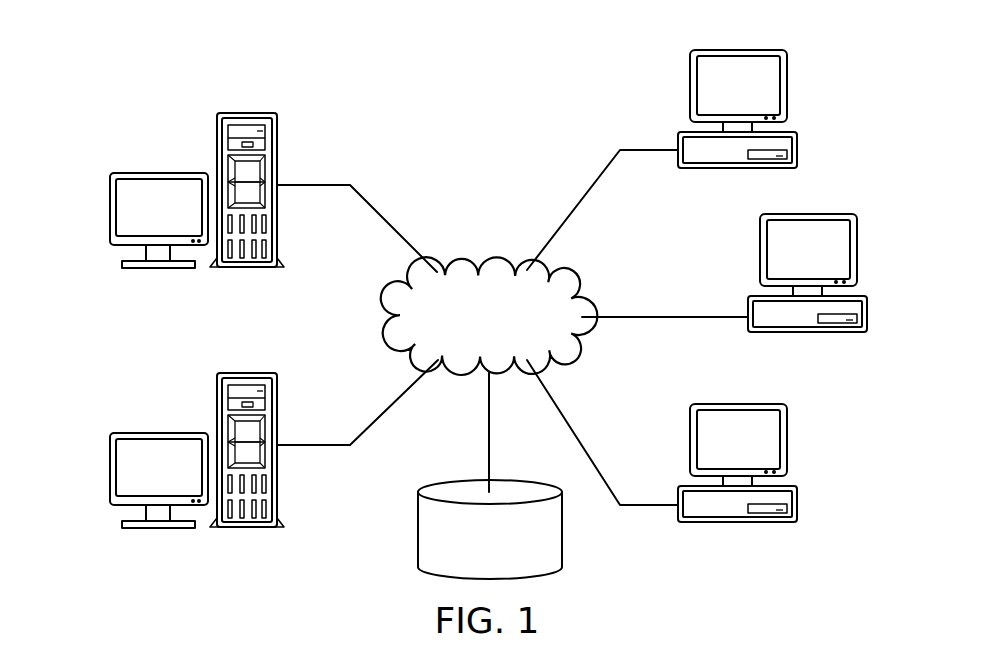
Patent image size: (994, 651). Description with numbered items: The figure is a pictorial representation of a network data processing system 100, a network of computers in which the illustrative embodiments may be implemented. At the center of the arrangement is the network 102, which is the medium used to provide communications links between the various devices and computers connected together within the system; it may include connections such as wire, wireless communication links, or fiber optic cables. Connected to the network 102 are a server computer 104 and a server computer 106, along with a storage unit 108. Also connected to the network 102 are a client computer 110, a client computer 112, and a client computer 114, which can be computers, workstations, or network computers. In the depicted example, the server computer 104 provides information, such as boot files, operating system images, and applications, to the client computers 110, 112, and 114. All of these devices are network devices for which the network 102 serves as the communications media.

The network data processing system 100 is at (350, 60).
The network 102 is at (462, 262).
The server computer 104 is at (110, 187).
The server computer 106 is at (110, 468).
The storage unit 108 is at (418, 528).
The client computer 110 is at (797, 140).
The client computer 112 is at (868, 325).
The client computer 114 is at (797, 512).